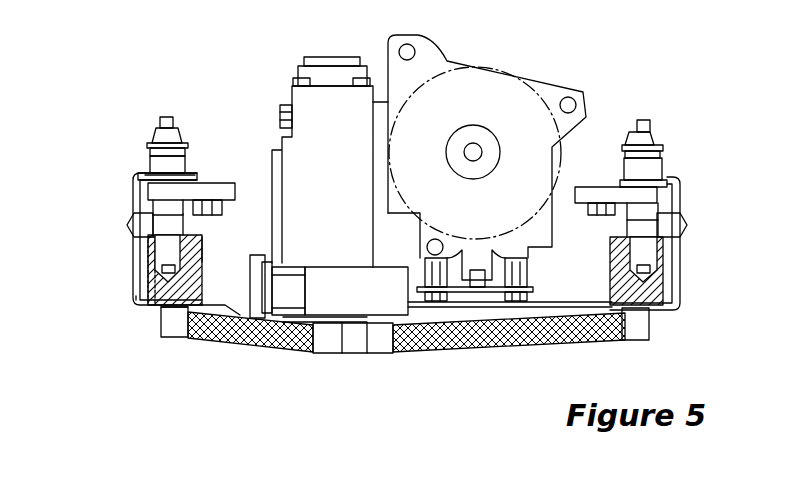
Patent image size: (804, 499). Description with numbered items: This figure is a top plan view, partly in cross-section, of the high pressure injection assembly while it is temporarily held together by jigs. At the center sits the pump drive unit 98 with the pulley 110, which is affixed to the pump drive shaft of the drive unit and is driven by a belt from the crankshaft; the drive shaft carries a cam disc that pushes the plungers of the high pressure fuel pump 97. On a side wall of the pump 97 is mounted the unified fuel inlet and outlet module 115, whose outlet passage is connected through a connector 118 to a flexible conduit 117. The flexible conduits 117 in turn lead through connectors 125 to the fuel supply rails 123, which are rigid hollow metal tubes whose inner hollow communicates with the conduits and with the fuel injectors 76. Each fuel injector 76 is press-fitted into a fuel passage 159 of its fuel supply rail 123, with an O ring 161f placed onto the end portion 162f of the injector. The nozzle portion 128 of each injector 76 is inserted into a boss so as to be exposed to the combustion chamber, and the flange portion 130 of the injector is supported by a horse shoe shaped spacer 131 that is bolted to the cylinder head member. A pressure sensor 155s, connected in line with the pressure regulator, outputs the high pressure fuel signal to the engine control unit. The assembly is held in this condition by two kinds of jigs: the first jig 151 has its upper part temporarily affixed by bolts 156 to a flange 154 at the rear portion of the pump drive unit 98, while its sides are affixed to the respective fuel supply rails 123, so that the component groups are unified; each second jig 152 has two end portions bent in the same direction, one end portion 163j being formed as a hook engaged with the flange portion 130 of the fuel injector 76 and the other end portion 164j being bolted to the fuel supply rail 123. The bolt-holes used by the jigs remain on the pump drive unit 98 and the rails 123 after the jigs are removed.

The fuel injector 76 is at (152, 140).
The high pressure fuel pump 97 is at (292, 95).
The pump drive unit 98 is at (561, 85).
The pulley 110 is at (452, 77).
The unified fuel inlet and outlet module 115 is at (352, 262).
The flexible conduit 117 is at (243, 348).
The connector 118 is at (378, 340).
The fuel supply rail 123 is at (152, 272).
The connector 125 is at (175, 337).
The nozzle portion 128 is at (168, 116).
The flange portion 130 is at (195, 180).
The horse shoe shaped spacer 131 is at (223, 183).
The first jig 151 is at (475, 308).
The second jig 152 is at (133, 196).
The flange 154 is at (533, 299).
The pressure sensor 155s is at (251, 272).
The bolt 156 is at (515, 303).
The fuel passage 159 is at (137, 305).
The O ring 161f is at (150, 253).
The end portion 162f is at (208, 242).
The end portion 163j is at (138, 172).
The end portion 164j is at (178, 308).